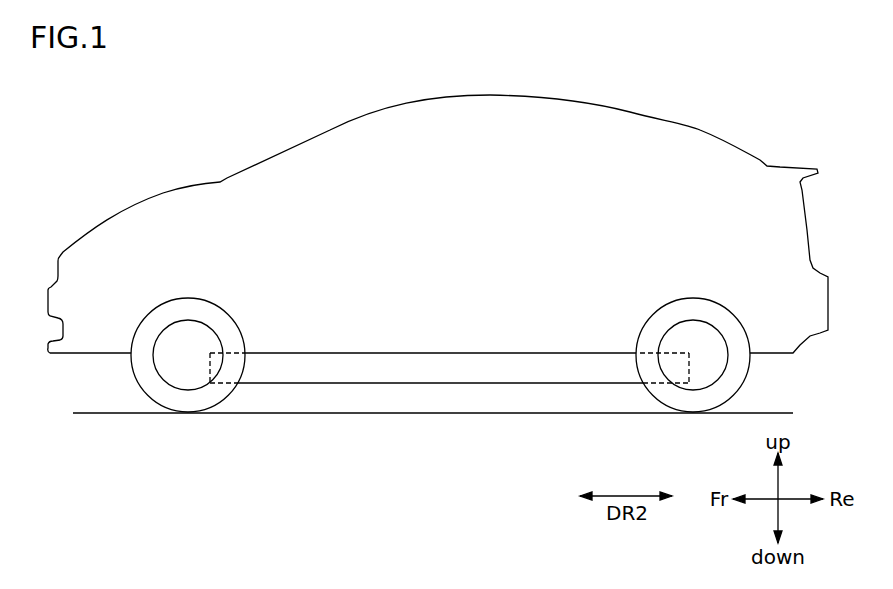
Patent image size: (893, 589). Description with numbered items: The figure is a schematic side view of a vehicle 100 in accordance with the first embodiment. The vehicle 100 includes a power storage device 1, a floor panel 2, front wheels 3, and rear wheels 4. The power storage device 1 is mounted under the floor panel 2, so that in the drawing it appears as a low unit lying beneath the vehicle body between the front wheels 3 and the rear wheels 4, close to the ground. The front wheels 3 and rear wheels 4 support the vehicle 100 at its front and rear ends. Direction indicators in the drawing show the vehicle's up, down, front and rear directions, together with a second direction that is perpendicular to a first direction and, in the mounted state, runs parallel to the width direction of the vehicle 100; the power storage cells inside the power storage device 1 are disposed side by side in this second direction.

The vehicle 100 is at (765, 83).
The power storage device 1 is at (578, 392).
The floor panel 2 is at (438, 354).
The front wheels 3 is at (188, 400).
The rear wheels 4 is at (695, 400).